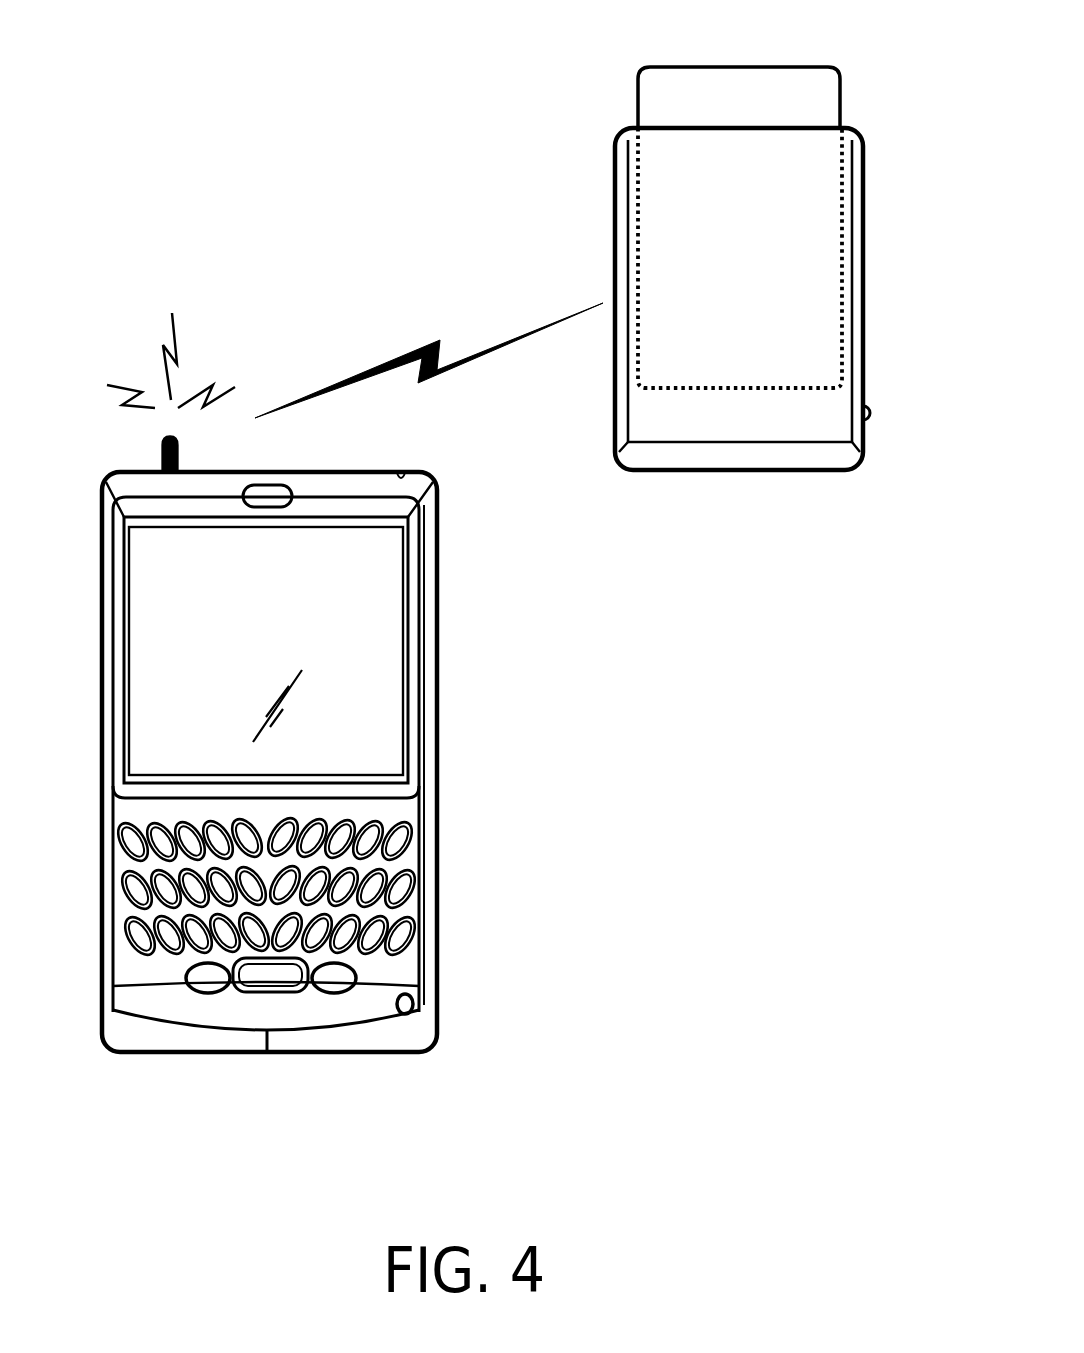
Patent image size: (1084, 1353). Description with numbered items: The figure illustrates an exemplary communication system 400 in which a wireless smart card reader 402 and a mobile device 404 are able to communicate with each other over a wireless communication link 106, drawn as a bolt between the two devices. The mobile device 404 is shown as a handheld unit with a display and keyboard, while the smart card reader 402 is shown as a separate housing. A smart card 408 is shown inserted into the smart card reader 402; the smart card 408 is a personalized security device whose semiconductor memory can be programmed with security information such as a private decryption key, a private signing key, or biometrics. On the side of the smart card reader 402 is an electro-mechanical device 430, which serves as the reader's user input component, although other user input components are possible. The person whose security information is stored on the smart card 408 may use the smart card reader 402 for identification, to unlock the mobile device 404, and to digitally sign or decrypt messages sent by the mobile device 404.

The communication system 400 is at (312, 82).
The mobile device 404 is at (287, 472).
The wireless communication link 106 is at (380, 367).
The wireless smart card reader 402 is at (615, 262).
The smart card 408 is at (693, 65).
The electro-mechanical device 430 is at (871, 420).